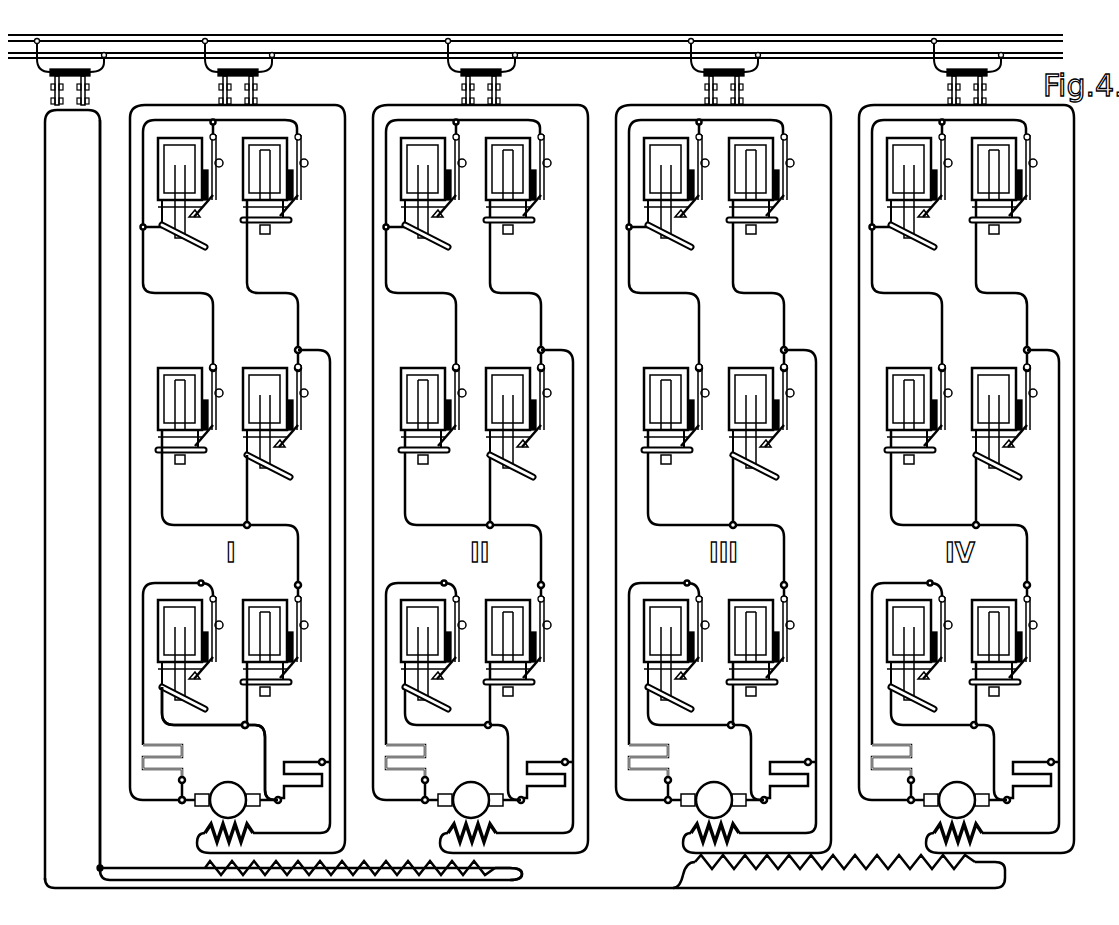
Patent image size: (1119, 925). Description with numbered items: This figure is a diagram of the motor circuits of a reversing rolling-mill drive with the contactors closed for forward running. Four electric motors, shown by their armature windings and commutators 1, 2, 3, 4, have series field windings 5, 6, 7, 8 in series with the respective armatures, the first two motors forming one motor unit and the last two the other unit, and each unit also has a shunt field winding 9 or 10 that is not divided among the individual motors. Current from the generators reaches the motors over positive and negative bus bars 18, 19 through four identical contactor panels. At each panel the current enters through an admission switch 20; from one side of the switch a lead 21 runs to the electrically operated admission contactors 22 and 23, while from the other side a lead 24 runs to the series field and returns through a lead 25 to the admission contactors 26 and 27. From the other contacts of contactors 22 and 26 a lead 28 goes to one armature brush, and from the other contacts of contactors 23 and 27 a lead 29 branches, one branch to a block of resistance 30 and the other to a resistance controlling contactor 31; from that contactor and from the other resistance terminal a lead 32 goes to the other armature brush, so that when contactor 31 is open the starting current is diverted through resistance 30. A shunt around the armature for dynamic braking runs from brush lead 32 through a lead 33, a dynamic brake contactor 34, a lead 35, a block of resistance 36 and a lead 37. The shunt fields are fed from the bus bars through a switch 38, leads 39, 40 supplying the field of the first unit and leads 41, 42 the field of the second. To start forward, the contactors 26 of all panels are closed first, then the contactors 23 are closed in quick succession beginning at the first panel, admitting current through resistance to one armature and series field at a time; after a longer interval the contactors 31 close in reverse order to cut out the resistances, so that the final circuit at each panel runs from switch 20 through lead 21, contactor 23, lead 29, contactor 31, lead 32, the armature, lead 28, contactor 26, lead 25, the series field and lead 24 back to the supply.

The motor armature winding 1 is at (232, 783).
The motor armature winding 2 is at (476, 783).
The motor armature winding 3 is at (718, 783).
The motor armature winding 4 is at (961, 783).
The series field winding 5 is at (217, 828).
The series field winding 6 is at (450, 833).
The series field winding 7 is at (692, 831).
The series field winding 8 is at (935, 831).
The shunt field winding 9 is at (375, 864).
The shunt field winding 10 is at (845, 862).
The positive bus bar 18 is at (1066, 41).
The negative bus bar 19 is at (1066, 57).
The admission switch 20 is at (222, 100).
The lead 21 is at (212, 312).
The admission contactor 22 is at (206, 227).
The admission contactor 23 is at (203, 452).
The lead 24 is at (345, 245).
The lead 25 is at (330, 485).
The admission contactor 26 is at (289, 214).
The admission contactor 27 is at (293, 450).
The lead 28 is at (131, 315).
The lead 29 is at (292, 534).
The block of resistance 30 is at (283, 760).
The resistance controlling contactor 31 is at (290, 682).
The lead 32 is at (249, 715).
The lead 33 is at (190, 727).
The dynamic brake contactor 34 is at (205, 680).
The lead 35 is at (185, 588).
The block of resistance 36 is at (184, 768).
The lead 37 is at (185, 790).
The switch 38 is at (52, 95).
The lead 39 is at (532, 870).
The lead 40 is at (160, 868).
The lead 41 is at (1003, 876).
The lead 42 is at (680, 872).